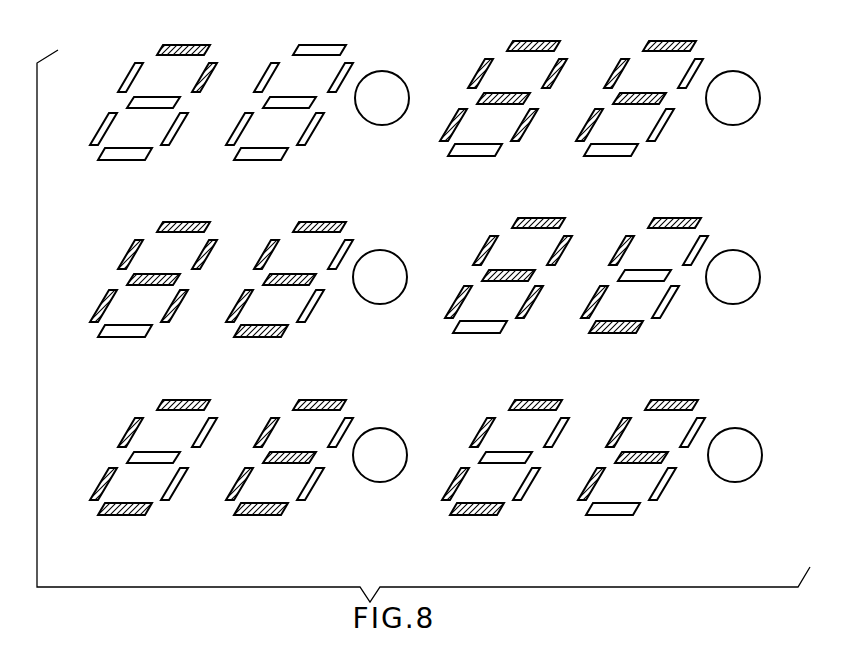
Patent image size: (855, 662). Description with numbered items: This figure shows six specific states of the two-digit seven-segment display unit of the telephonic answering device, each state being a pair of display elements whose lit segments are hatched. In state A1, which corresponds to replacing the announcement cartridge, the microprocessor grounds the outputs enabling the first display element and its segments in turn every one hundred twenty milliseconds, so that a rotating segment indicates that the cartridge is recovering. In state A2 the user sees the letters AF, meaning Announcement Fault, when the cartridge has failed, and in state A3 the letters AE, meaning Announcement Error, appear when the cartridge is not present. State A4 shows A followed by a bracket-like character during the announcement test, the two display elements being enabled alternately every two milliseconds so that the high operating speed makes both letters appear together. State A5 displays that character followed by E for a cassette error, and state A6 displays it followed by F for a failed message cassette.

The announcement cartridge replacing state A1 is at (382, 98).
The announcement cartridge failed state A2 is at (733, 98).
The announcement cartridge not present state A3 is at (380, 277).
The announcement test state A4 is at (733, 277).
The erroneous message mechanics preset or message cassette not present state A5 is at (380, 455).
The message cassette failed state A6 is at (735, 455).